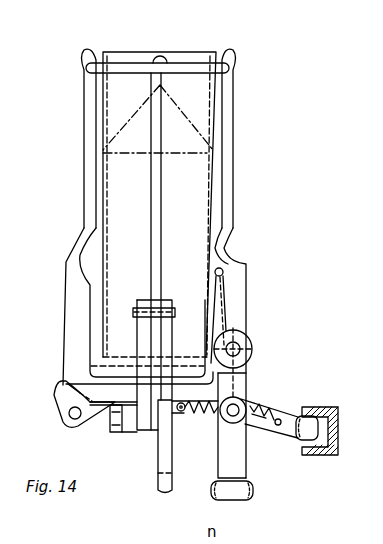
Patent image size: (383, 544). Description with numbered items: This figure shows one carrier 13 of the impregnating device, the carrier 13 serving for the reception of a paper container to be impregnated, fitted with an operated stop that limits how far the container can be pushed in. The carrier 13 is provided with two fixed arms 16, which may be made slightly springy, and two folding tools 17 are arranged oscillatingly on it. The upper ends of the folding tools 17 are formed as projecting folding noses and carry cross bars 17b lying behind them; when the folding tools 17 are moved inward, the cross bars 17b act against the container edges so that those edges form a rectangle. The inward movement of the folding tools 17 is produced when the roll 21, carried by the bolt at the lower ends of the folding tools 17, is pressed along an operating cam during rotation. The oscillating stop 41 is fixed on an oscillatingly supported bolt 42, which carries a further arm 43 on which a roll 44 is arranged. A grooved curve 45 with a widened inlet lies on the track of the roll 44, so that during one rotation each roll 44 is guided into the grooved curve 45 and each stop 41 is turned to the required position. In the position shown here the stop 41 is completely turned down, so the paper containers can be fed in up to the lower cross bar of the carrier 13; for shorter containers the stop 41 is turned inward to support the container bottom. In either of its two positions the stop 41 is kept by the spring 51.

The fixed arms 16 is at (84, 249).
The folding tools 17 is at (150, 247).
The cross bars 17b is at (140, 61).
The roll 21 is at (112, 434).
The oscillating stop 41 is at (224, 270).
The carrier 13 is at (200, 377).
The oscillatingly supported bolt 42 is at (236, 414).
The arm 43 is at (270, 438).
The roll 44 is at (306, 448).
The grooved curve 45 is at (322, 408).
The spring 51 is at (209, 412).